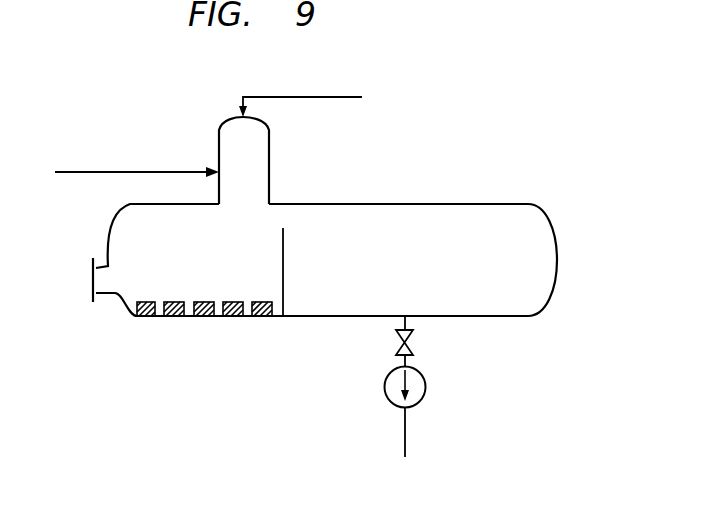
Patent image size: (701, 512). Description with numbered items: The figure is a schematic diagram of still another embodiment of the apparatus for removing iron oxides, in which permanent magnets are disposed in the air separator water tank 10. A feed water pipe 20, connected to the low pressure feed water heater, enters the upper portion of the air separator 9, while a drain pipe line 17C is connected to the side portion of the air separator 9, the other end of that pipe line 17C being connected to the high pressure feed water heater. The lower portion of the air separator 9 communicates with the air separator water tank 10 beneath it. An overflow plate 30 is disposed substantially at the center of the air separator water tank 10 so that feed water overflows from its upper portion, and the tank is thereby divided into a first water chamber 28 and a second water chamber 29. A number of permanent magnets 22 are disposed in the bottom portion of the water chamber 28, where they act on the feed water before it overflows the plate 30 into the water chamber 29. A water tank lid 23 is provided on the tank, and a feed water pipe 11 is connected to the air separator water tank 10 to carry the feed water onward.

The air separator 9 is at (270, 157).
The air separator water tank 10 is at (558, 249).
The feed water pipe 11 is at (405, 432).
The drain pipe line 17C is at (128, 172).
The feed water pipe 20 is at (303, 97).
The permanent magnets 22 is at (260, 302).
The water tank lid 23 is at (93, 280).
The water chamber 28 is at (213, 236).
The water chamber 29 is at (425, 258).
The overflow plate 30 is at (284, 241).